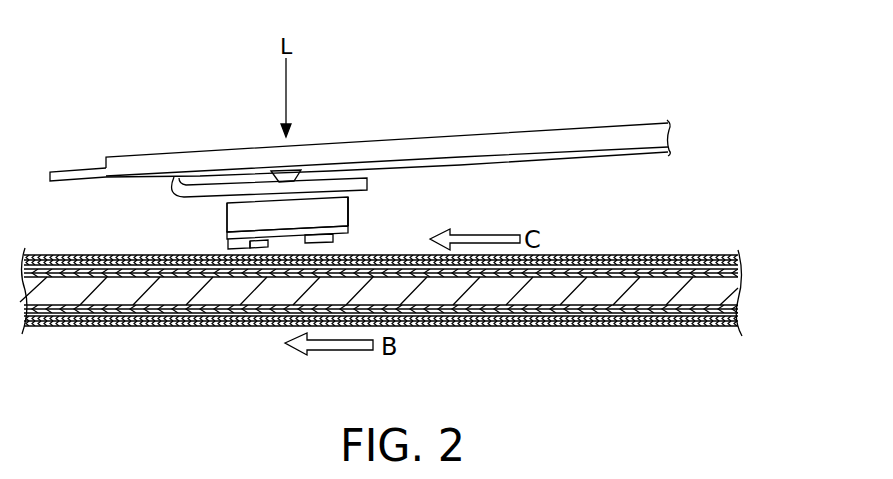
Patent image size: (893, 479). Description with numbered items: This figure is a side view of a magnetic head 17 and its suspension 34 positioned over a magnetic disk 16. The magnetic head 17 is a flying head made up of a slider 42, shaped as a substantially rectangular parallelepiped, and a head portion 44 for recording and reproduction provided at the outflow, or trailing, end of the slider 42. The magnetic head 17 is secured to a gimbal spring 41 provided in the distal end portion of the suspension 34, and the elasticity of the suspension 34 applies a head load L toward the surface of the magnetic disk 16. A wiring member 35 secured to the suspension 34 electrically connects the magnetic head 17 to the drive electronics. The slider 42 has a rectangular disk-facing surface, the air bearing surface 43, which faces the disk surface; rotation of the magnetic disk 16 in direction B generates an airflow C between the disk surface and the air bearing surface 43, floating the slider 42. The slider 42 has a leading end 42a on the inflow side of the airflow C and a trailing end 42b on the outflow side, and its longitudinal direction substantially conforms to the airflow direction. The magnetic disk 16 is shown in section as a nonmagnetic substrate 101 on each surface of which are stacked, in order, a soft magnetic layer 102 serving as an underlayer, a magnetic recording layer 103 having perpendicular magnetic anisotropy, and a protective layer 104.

The magnetic disk 16 is at (412, 266).
The magnetic head 17 is at (368, 217).
The suspension 34 is at (550, 138).
The wiring member 35 is at (565, 158).
The gimbal spring 41 is at (353, 188).
The slider 42 is at (271, 242).
The leading end 42a is at (352, 205).
The trailing end 42b is at (226, 229).
The disk-facing surface (air bearing surface, ABS) 43 is at (287, 256).
The head portion 44 is at (236, 220).
The substrate 101 is at (548, 297).
The soft magnetic layer 102 is at (715, 272).
The magnetic recording layer 103 is at (644, 262).
The protective layer 104 is at (718, 256).